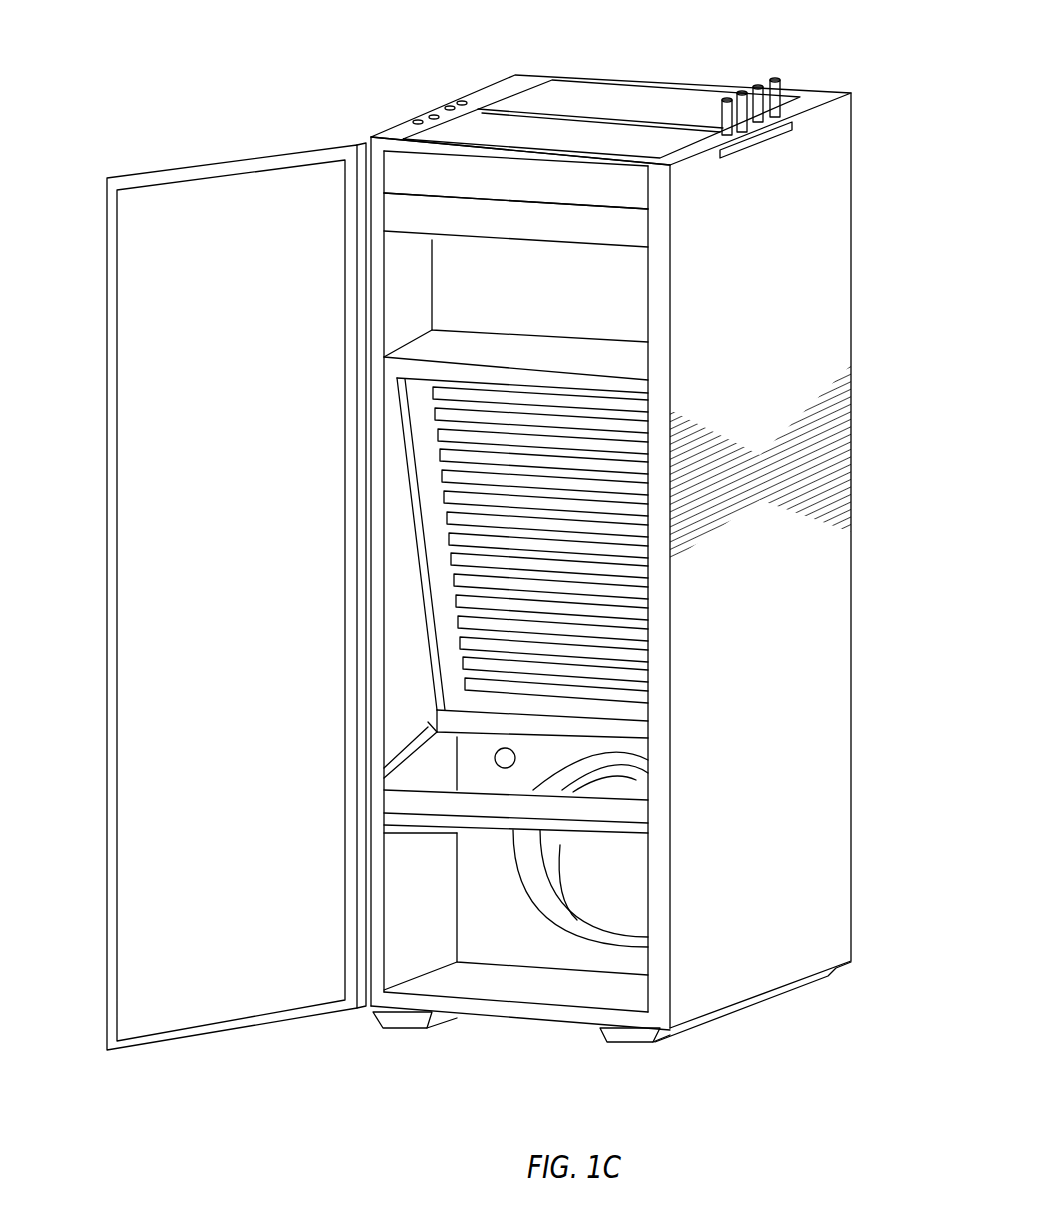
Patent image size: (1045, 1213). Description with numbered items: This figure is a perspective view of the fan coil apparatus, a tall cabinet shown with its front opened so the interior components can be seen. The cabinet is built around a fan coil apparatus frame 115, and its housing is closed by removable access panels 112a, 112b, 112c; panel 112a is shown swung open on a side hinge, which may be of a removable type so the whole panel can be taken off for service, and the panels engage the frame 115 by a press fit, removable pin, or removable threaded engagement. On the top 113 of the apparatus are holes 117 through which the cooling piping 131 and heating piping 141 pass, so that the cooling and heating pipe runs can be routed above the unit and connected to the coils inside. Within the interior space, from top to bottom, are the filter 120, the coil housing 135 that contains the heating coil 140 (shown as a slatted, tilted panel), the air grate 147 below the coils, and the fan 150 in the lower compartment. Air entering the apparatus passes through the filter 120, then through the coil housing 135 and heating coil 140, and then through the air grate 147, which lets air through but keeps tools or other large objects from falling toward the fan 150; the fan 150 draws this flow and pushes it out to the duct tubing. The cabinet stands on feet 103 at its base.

The feet 103 is at (408, 1025).
The access panel 112a is at (243, 266).
The access panel 112b is at (783, 792).
The access panel 112c is at (412, 862).
The top 113 is at (513, 82).
The fan coil apparatus frame 115 is at (597, 230).
The holes 117 is at (433, 115).
The filter 120 is at (480, 174).
The cooling piping 131 is at (757, 148).
The heating piping 141 is at (751, 106).
The coil housing 135 is at (442, 580).
The heating coil 140 is at (456, 478).
The air grate 147 is at (610, 808).
The fan 150 is at (618, 905).